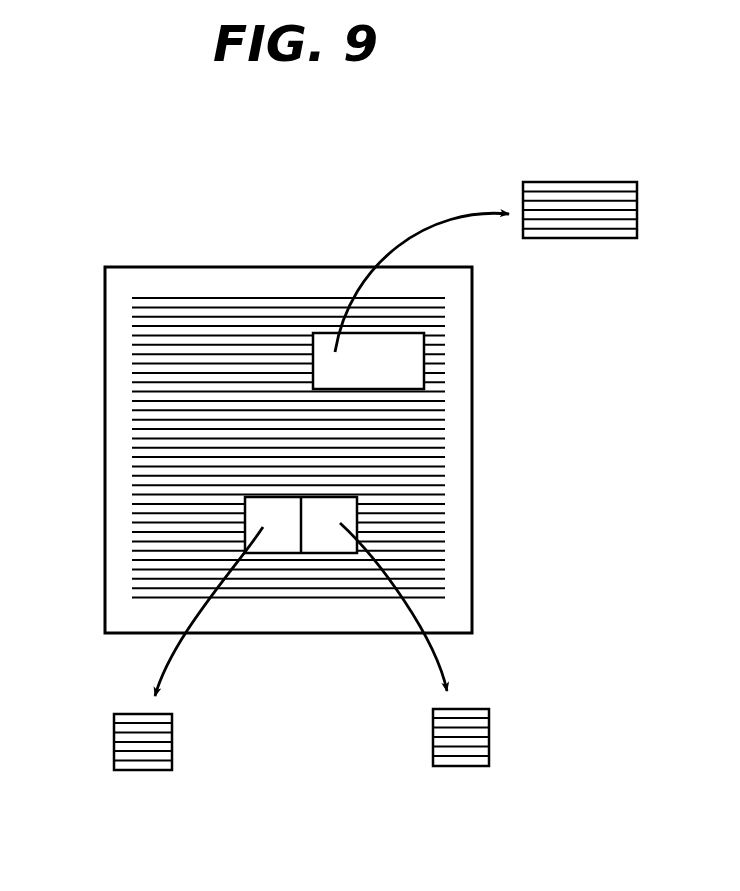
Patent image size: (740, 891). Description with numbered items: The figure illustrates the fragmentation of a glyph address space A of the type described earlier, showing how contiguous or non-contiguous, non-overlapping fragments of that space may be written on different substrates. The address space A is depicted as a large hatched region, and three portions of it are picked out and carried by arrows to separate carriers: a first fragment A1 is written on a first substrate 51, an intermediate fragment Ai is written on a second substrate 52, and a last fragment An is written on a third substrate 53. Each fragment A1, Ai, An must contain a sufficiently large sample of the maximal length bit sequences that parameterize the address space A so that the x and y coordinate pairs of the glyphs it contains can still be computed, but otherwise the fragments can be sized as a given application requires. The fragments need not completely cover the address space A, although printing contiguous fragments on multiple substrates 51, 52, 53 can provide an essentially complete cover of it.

The address space A is at (140, 371).
The first fragment of the address space A1 is at (574, 201).
The intermediate fragment of the address space Ai is at (134, 757).
The last fragment of the address space An is at (450, 752).
The substrate 51 is at (584, 240).
The substrate 52 is at (172, 743).
The substrate 53 is at (489, 739).